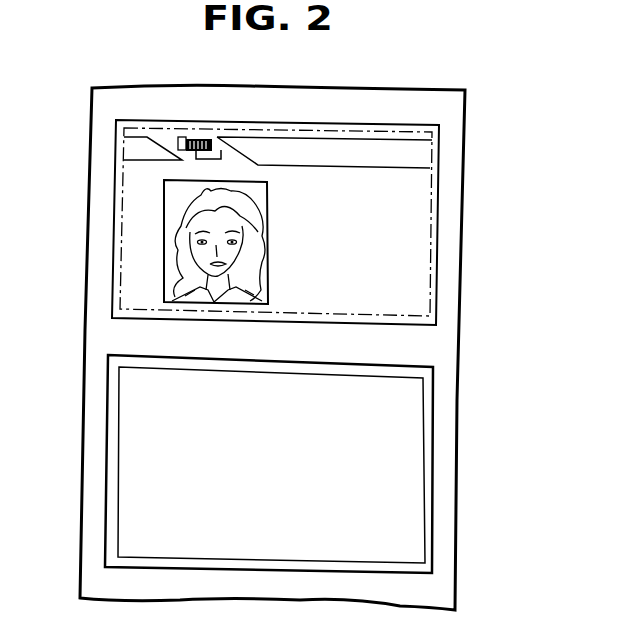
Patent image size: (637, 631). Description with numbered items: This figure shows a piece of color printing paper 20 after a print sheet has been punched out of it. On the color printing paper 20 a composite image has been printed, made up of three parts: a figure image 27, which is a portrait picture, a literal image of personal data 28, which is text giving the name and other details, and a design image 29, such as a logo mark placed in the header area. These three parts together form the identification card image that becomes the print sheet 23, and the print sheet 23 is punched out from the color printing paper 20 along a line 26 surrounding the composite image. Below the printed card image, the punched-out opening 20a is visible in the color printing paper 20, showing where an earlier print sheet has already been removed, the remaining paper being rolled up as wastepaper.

The color printing paper 20 is at (438, 346).
The punched-out opening 20a is at (424, 455).
The print sheet 23 is at (284, 194).
The line 26 is at (432, 242).
The figure image 27 is at (188, 218).
The literal image of personal data 28 is at (418, 205).
The design image 29 is at (233, 147).